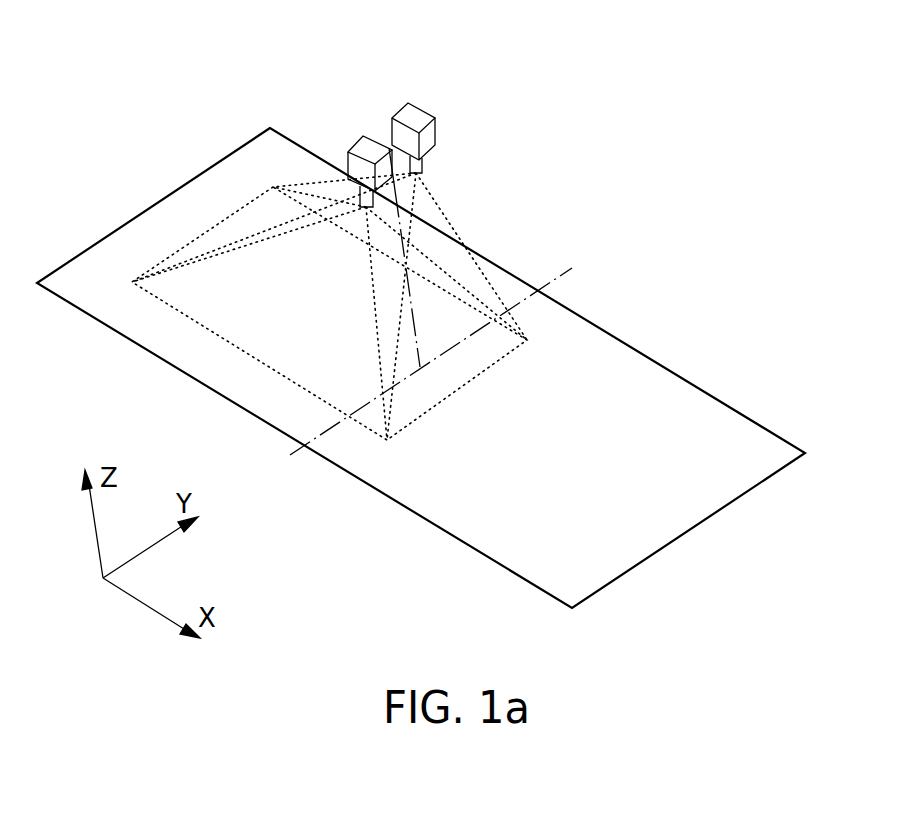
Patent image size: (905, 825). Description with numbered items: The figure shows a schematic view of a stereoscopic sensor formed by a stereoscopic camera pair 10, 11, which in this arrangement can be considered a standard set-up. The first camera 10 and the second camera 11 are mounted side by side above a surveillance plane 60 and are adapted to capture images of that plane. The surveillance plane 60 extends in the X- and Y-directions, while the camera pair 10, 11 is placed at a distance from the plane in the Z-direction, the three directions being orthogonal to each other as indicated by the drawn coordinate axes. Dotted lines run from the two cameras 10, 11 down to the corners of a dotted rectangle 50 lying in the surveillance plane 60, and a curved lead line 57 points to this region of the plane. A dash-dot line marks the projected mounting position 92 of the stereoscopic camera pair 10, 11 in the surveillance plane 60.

The first camera 10 is at (373, 145).
The second camera 11 is at (413, 116).
The measurement region 50 is at (247, 298).
The camera field of view lines 57 is at (467, 363).
The surveillance plane 60 is at (728, 405).
The projected mounting position 92 is at (293, 451).